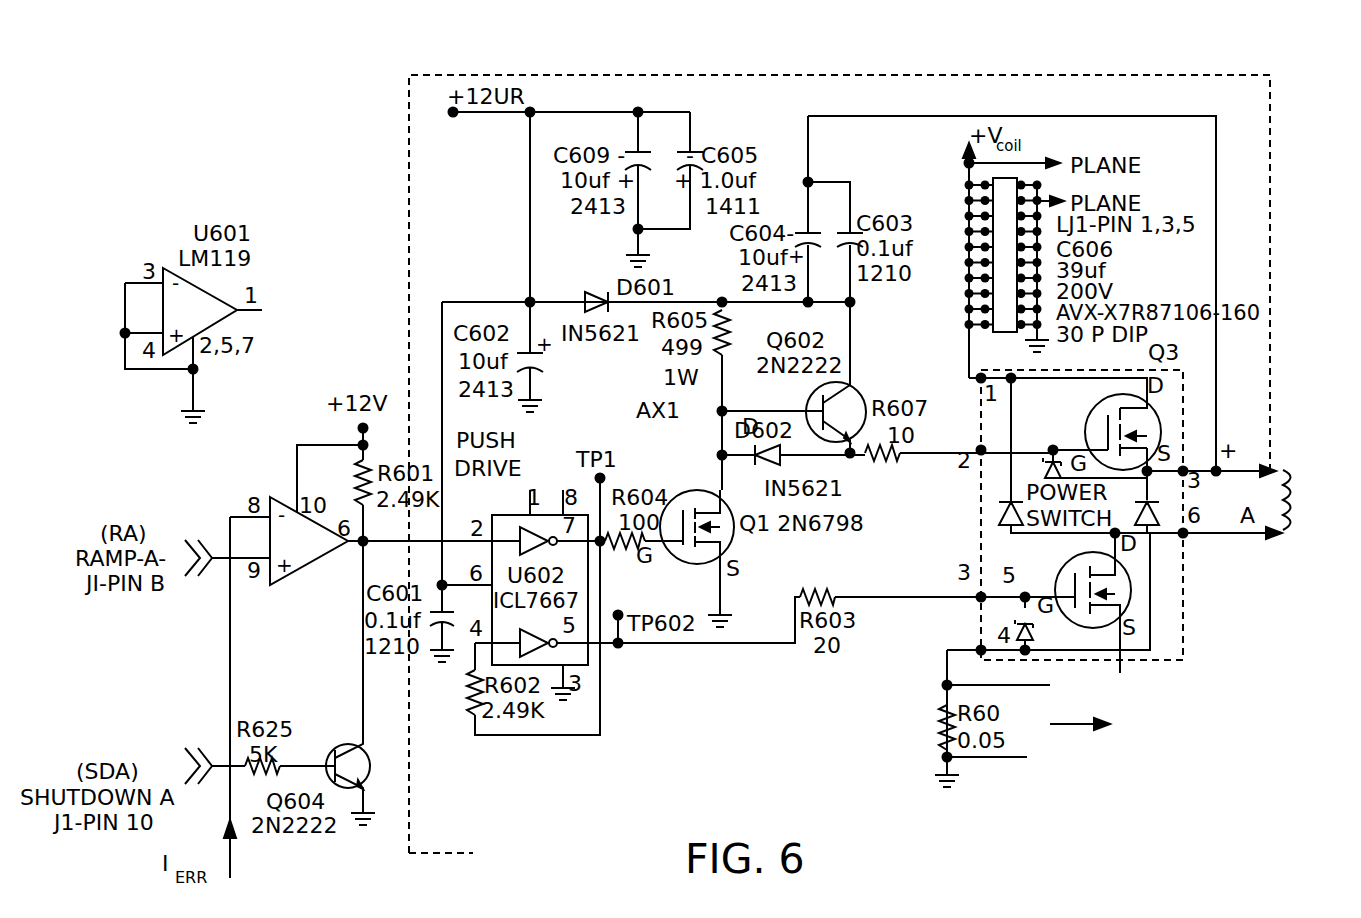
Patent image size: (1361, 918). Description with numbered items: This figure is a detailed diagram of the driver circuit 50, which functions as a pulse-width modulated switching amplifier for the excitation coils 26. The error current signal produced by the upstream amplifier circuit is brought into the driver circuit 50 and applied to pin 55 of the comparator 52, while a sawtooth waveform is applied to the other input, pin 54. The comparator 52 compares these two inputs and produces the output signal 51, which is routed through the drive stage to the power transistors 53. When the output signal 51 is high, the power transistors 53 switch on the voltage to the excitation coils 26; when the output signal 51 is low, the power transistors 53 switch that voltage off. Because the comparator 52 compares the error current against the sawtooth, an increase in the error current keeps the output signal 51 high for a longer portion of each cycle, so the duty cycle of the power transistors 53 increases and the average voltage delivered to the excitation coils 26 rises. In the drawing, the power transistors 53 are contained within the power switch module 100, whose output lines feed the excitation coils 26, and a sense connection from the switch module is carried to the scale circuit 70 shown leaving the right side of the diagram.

The driver circuit 50 is at (658, 70).
The output signal 51 is at (366, 545).
The comparator 52 is at (310, 562).
The power transistors 53 is at (981, 521).
The pin 54 is at (213, 567).
The pin 55 is at (229, 535).
The power switch module 100 is at (1082, 529).
The excitation coils 26 is at (1292, 497).
The scale circuit 70 is at (1135, 752).